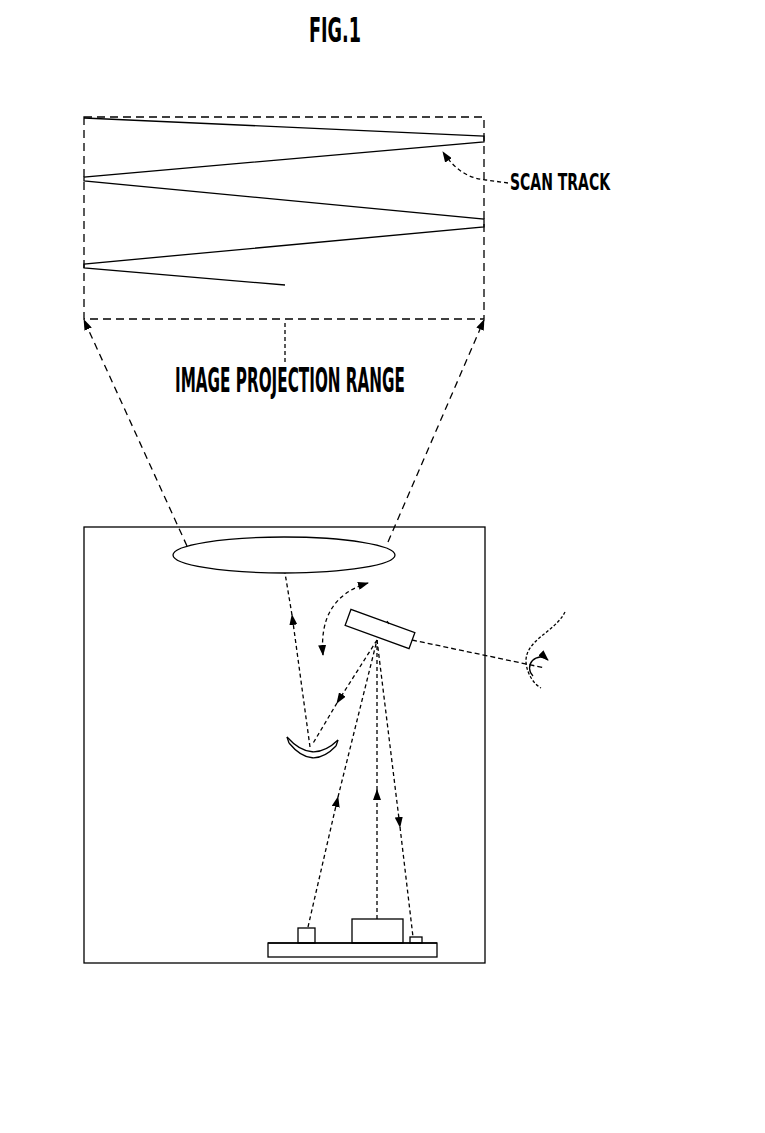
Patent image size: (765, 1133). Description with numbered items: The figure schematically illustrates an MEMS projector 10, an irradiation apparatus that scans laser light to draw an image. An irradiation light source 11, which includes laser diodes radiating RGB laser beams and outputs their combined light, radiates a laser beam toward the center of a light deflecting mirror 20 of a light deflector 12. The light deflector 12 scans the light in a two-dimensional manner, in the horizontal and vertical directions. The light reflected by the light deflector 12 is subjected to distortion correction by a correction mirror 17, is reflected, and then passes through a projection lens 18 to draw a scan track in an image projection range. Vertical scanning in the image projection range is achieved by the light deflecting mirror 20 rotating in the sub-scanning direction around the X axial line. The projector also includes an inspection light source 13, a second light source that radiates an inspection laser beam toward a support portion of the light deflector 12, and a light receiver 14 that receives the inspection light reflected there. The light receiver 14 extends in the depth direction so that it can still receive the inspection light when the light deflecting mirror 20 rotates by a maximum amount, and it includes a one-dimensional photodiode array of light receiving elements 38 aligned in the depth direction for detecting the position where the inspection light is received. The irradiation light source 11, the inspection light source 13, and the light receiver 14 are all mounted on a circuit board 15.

The MEMS projector 10 is at (470, 518).
The irradiation light source 11 is at (360, 919).
The light deflector 12 is at (417, 635).
The inspection light source 13 is at (297, 940).
The light receiver 14 is at (420, 942).
The circuit board 15 is at (437, 949).
The correction mirror 17 is at (313, 758).
The projection lens 18 is at (172, 556).
The light deflecting mirror 20 is at (387, 621).
The light receiving elements 38 is at (415, 936).